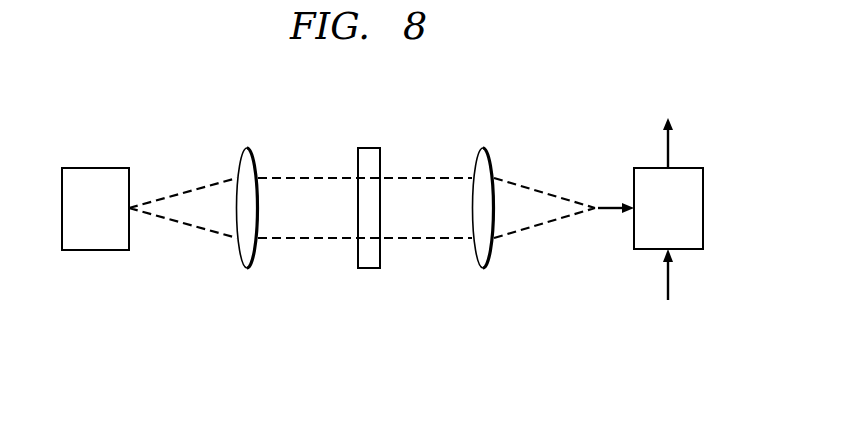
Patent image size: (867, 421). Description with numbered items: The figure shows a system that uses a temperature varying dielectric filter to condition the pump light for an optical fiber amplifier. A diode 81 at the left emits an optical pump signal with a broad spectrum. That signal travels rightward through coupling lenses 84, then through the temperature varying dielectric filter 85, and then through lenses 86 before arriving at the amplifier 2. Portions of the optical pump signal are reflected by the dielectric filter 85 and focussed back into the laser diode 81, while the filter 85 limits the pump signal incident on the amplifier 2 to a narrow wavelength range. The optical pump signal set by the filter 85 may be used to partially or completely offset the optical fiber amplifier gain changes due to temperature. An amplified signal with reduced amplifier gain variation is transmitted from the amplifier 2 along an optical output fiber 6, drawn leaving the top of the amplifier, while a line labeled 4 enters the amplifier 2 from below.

The diode 81 is at (97, 168).
The coupling lenses 84 is at (249, 150).
The temperature varying dielectric filter 85 is at (370, 148).
The lenses 86 is at (485, 150).
The amplifier 2 is at (703, 208).
The optical output fiber 6 is at (668, 147).
The input 4 is at (668, 283).